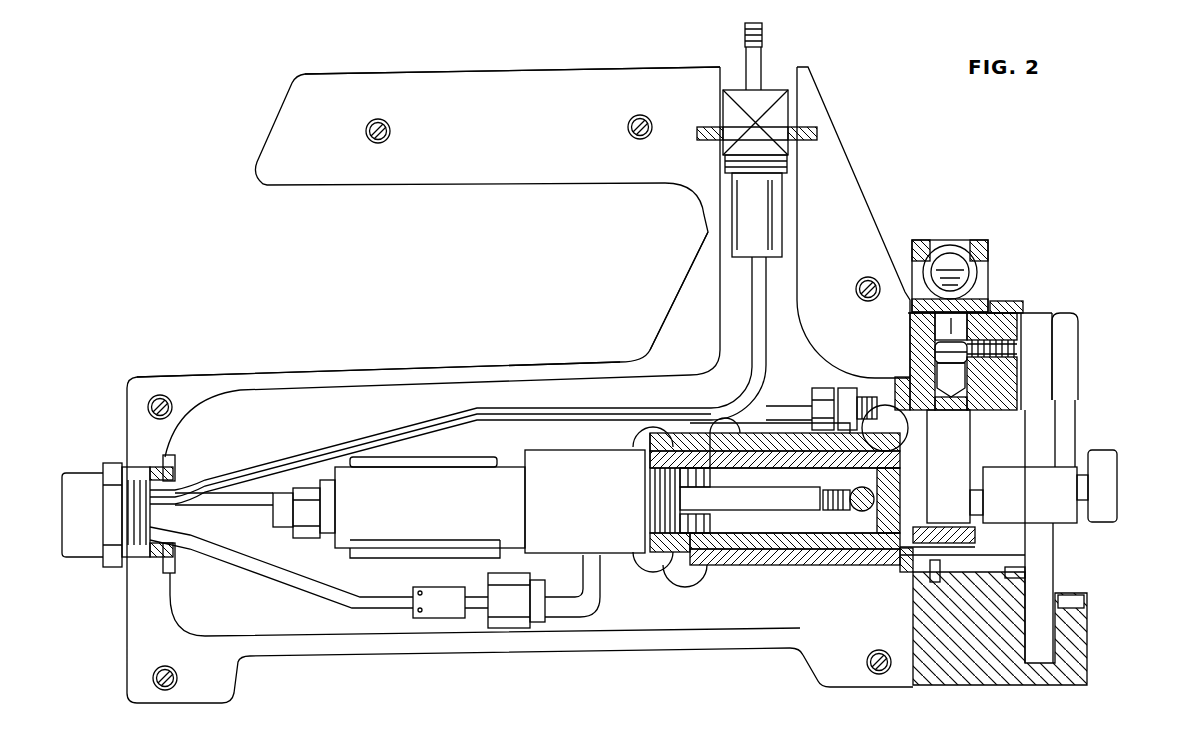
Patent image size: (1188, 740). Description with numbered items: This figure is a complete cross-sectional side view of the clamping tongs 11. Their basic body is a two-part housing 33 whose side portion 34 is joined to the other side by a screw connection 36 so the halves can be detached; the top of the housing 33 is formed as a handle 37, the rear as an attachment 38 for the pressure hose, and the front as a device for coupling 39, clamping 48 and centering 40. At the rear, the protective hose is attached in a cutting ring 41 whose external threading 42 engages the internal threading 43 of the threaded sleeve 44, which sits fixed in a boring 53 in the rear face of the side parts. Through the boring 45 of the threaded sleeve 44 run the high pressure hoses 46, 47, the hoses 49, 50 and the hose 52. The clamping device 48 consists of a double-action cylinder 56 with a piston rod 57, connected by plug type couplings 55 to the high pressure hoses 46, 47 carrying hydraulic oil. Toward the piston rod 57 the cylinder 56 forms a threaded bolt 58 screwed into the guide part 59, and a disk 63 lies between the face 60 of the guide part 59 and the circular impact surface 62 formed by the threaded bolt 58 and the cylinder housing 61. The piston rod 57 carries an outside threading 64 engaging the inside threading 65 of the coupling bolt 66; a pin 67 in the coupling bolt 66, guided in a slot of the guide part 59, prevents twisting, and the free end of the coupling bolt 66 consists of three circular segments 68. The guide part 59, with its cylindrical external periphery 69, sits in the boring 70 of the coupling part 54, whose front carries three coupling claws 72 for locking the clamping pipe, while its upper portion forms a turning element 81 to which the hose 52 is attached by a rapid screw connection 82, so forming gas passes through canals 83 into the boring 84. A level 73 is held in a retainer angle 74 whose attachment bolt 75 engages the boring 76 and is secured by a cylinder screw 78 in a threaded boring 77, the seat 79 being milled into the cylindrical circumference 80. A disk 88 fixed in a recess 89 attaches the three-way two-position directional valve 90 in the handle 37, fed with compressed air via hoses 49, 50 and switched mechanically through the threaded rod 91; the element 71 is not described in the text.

The clamping tongs 11 is at (212, 212).
The housing 33 is at (236, 375).
The side portion 34 is at (648, 350).
The screw connection 36 is at (368, 140).
The handle 37 is at (535, 90).
The attachment 38 is at (110, 586).
The device for coupling 39 is at (1070, 440).
The centering device 40 is at (1006, 425).
The cutting ring 41 is at (78, 490).
The external threading 42 is at (127, 530).
The internal threading 43 is at (182, 462).
The threaded sleeve 44 is at (153, 557).
The boring 45 is at (177, 547).
The high pressure hose 46 is at (252, 515).
The high pressure hose 47 is at (263, 555).
The clamping device 48 is at (1117, 471).
The hose 49 is at (501, 380).
The hose 50 is at (763, 290).
The hose 52 is at (767, 405).
The boring 53 is at (143, 467).
The coupling part 54 is at (1000, 660).
The plug type coupling 55 is at (293, 513).
The cylinder 56 is at (600, 515).
The piston rod 57 is at (777, 497).
The threaded bolt 58 is at (690, 548).
The guide part 59 is at (737, 540).
The face 60 is at (647, 457).
The cylinder housing 61 is at (570, 480).
The circular impact surface 62 is at (641, 548).
The disk 63 is at (657, 548).
The outside threading 64 is at (847, 515).
The inside threading 65 is at (865, 512).
The coupling bolt 66 is at (1053, 480).
The pin 67 is at (890, 535).
The circular segments 68 is at (1108, 478).
The external periphery 69 is at (790, 542).
The boring 70 is at (782, 548).
The plate 71 is at (968, 567).
The coupling claws 72 is at (1070, 628).
The level 73 is at (965, 272).
The retainer angle 74 is at (975, 240).
The attachment bolt 75 is at (997, 322).
The boring 76 is at (960, 383).
The threaded boring 77 is at (1013, 322).
The cylinder screw 78 is at (977, 347).
The seat 79 is at (962, 327).
The cylindrical circumference 80 is at (998, 305).
The turning element 81 is at (867, 378).
The rapid screw connection 82 is at (833, 387).
The canals 83 is at (893, 450).
The boring 84 is at (1025, 575).
The disk 88 is at (703, 125).
The recess 89 is at (815, 130).
The 3/2 directional valve 90 is at (738, 95).
The threaded rod 91 is at (762, 46).